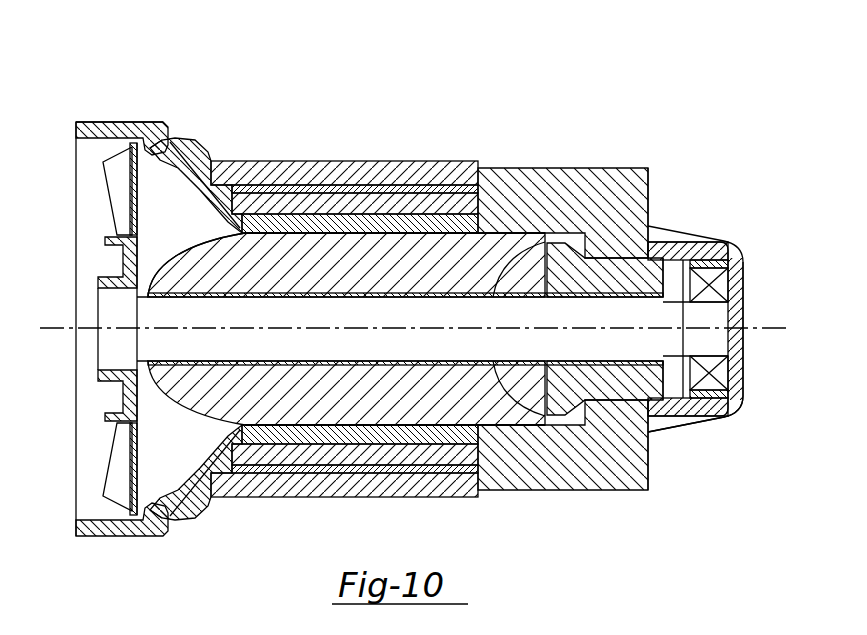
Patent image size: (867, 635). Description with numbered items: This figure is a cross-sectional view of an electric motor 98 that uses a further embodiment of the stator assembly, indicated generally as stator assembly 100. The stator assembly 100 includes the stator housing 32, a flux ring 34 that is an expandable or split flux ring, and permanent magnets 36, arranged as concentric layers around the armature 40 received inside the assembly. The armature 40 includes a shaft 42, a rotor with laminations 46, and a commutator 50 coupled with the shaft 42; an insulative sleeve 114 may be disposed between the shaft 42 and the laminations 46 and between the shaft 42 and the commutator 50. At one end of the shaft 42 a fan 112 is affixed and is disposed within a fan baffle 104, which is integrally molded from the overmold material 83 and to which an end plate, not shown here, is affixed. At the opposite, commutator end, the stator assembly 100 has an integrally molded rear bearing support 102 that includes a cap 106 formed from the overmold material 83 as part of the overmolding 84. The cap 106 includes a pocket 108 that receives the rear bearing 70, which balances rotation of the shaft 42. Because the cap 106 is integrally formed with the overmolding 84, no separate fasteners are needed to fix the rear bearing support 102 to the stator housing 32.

The stator assembly 100 is at (570, 106).
The electric motor 98 is at (136, 564).
The fan baffle 104 is at (90, 130).
The fan 112 is at (137, 178).
The stator housing 32 is at (268, 172).
The flux ring 34 is at (322, 190).
The magnets 36 is at (372, 205).
The laminations 46 is at (426, 245).
The shaft 42 is at (146, 297).
The insulative sleeve 114 is at (490, 298).
The overmolding 84 is at (603, 168).
The overmold material 83 is at (632, 168).
The commutator 50 is at (642, 280).
The rear bearing support 102 is at (693, 240).
The cap 106 is at (728, 248).
The rear bearing 70 is at (722, 285).
The pocket 108 is at (740, 416).
The armature 40 is at (178, 437).